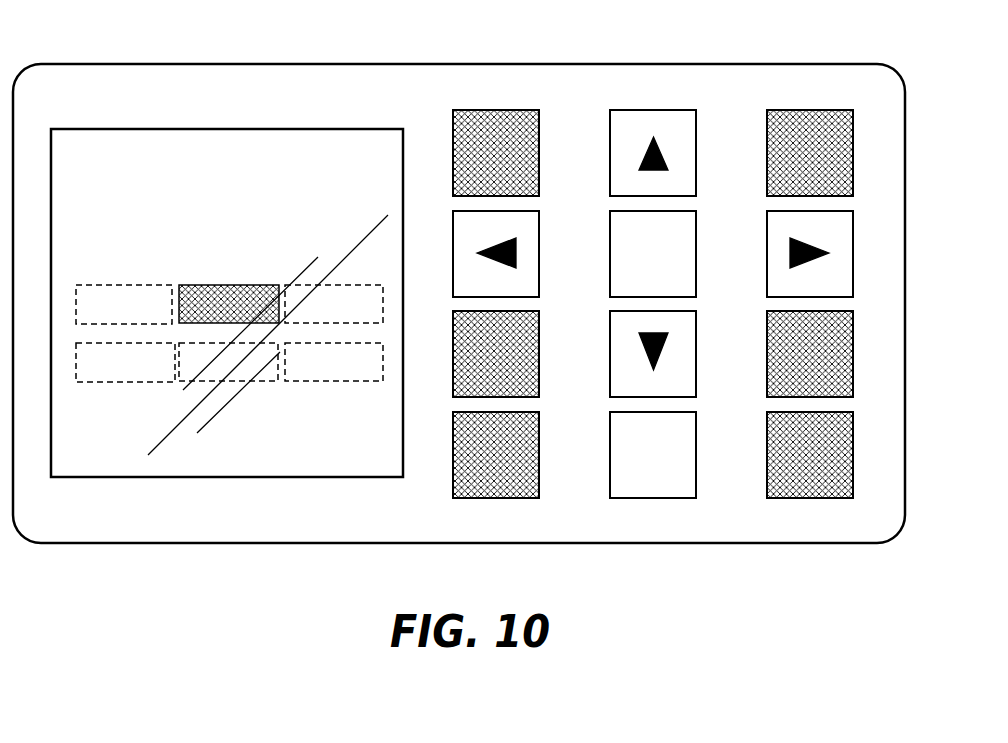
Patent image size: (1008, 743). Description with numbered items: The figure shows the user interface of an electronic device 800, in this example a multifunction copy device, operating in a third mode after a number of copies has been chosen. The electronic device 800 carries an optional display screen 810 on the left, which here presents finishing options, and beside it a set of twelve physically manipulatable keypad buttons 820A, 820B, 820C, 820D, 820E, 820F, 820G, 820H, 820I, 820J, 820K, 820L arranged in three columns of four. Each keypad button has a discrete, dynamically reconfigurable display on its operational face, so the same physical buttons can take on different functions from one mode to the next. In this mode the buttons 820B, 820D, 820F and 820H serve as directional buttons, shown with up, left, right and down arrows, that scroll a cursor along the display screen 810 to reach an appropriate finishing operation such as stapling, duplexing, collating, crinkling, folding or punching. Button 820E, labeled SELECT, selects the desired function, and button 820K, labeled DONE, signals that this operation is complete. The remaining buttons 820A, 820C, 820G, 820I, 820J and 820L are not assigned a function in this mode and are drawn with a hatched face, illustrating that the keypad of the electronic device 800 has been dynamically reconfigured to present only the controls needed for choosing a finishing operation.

The electronic device 800 is at (115, 63).
The display screen 810 is at (208, 160).
The keypad button 820A is at (482, 108).
The keypad button 820B is at (653, 108).
The keypad button 820C is at (832, 108).
The keypad button 820D is at (442, 158).
The keypad button 820E is at (614, 158).
The keypad button 820F is at (779, 158).
The keypad button 820G is at (432, 444).
The keypad button 820H is at (607, 444).
The keypad button 820I is at (774, 444).
The keypad button 820J is at (481, 494).
The keypad button 820K is at (653, 494).
The keypad button 820L is at (817, 494).